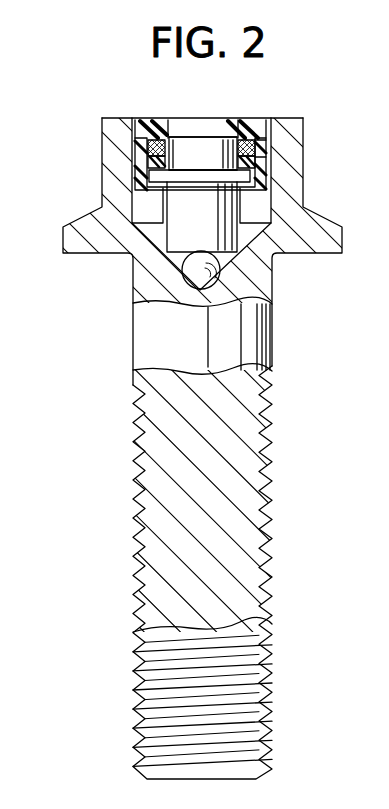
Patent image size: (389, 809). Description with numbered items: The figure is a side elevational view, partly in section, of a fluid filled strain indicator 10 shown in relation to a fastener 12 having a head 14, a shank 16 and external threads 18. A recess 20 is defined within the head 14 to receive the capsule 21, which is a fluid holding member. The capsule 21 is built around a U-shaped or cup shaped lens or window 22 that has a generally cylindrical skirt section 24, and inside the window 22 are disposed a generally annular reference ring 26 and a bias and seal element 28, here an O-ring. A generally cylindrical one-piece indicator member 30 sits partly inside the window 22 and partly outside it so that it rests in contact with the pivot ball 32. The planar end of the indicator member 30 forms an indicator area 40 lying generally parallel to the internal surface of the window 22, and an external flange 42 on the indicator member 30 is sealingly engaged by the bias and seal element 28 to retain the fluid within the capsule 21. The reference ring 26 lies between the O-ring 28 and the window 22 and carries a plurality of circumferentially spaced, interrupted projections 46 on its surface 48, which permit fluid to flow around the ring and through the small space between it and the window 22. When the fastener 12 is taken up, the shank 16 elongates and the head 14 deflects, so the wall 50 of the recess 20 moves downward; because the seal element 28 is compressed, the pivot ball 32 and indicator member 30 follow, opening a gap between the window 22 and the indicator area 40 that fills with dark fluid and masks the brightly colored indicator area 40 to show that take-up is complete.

The indicator 10 is at (304, 108).
The fastener 12 is at (126, 501).
The head 14 is at (108, 148).
The shank 16 is at (147, 337).
The external threads 18 is at (135, 565).
The recess 20 is at (131, 205).
The capsule 21 is at (203, 146).
The window 22 is at (167, 124).
The indicator cylinder 24 is at (264, 168).
The reference ring 26 is at (266, 150).
The bias and seal element 28 is at (148, 162).
The indicator member 30 is at (214, 163).
The pivot ball 32 is at (190, 270).
The indicator area 40 is at (218, 147).
The external flange 42 is at (193, 176).
The projections 46 is at (148, 140).
The surface 48 is at (266, 148).
The wall 50 is at (156, 239).